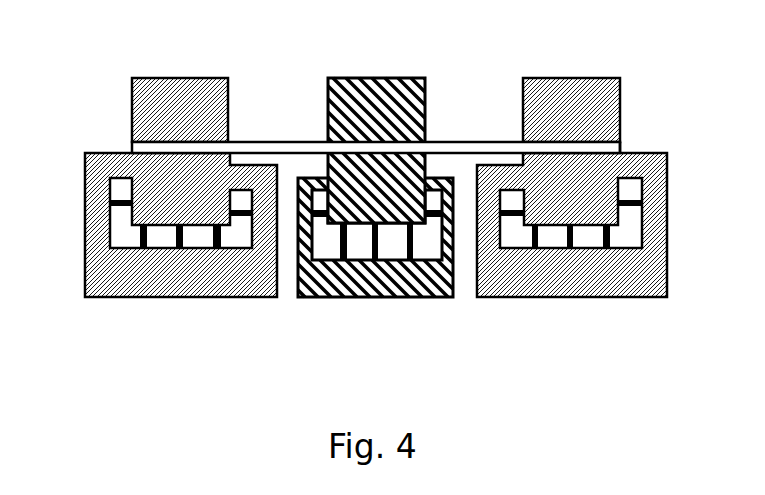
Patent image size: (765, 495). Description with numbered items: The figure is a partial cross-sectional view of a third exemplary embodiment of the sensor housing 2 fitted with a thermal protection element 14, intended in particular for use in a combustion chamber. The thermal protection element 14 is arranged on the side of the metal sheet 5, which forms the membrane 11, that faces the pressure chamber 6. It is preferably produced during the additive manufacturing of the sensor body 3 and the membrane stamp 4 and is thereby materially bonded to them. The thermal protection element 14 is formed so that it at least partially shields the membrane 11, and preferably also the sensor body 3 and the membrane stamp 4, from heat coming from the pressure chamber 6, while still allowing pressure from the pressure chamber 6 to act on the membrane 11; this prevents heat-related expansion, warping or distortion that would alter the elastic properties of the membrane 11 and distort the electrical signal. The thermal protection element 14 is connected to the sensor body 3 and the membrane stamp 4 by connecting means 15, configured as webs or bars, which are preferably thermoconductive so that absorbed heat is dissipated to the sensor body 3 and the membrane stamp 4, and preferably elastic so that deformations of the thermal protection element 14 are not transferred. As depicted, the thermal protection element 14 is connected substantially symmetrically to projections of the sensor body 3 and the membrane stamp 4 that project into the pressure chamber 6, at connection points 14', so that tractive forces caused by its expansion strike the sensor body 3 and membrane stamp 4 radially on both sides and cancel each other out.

The sensor housing 2 is at (88, 63).
The sensor body 3 is at (620, 98).
The membrane stamp 4 is at (425, 83).
The metal sheet 5 is at (628, 147).
The pressure chamber 6 is at (380, 405).
The membrane 11 is at (286, 148).
The thermal protection element 14 is at (269, 258).
The connection points 14' is at (551, 197).
The connecting means 15 is at (220, 235).